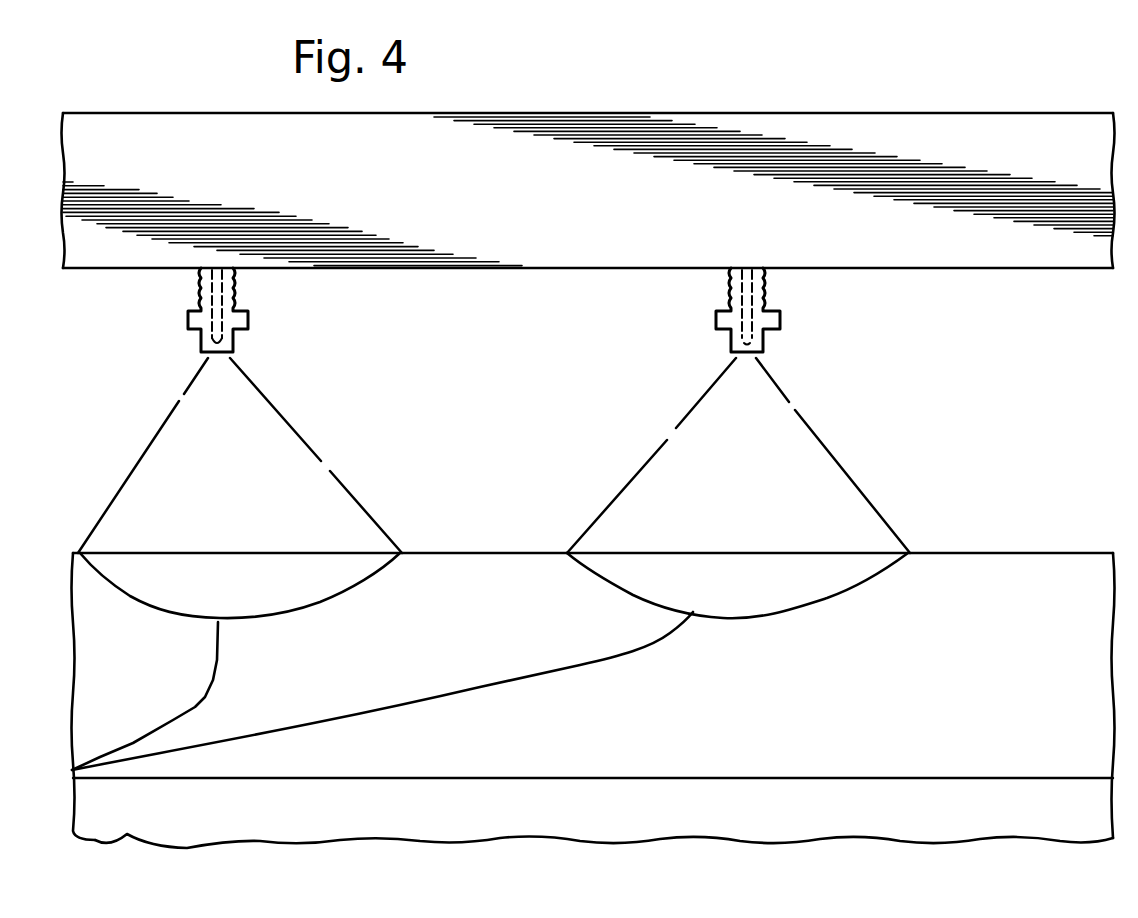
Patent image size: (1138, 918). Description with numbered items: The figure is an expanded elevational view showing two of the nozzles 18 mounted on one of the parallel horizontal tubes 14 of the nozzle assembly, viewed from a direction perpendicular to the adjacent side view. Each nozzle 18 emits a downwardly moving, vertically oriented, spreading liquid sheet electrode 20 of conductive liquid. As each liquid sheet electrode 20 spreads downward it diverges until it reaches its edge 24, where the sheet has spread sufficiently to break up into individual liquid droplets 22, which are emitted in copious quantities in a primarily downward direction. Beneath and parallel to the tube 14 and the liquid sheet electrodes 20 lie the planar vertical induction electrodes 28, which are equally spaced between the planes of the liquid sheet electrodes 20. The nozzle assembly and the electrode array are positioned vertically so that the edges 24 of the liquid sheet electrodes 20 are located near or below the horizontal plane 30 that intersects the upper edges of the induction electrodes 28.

The horizontal tube 14 is at (667, 113).
The nozzle 18 is at (730, 303).
The liquid sheet electrode 20 is at (670, 445).
The liquid droplets 22 is at (740, 805).
The edge 24 is at (72, 770).
The induction electrode 28 is at (1010, 568).
The horizontal plane 30 is at (1070, 550).